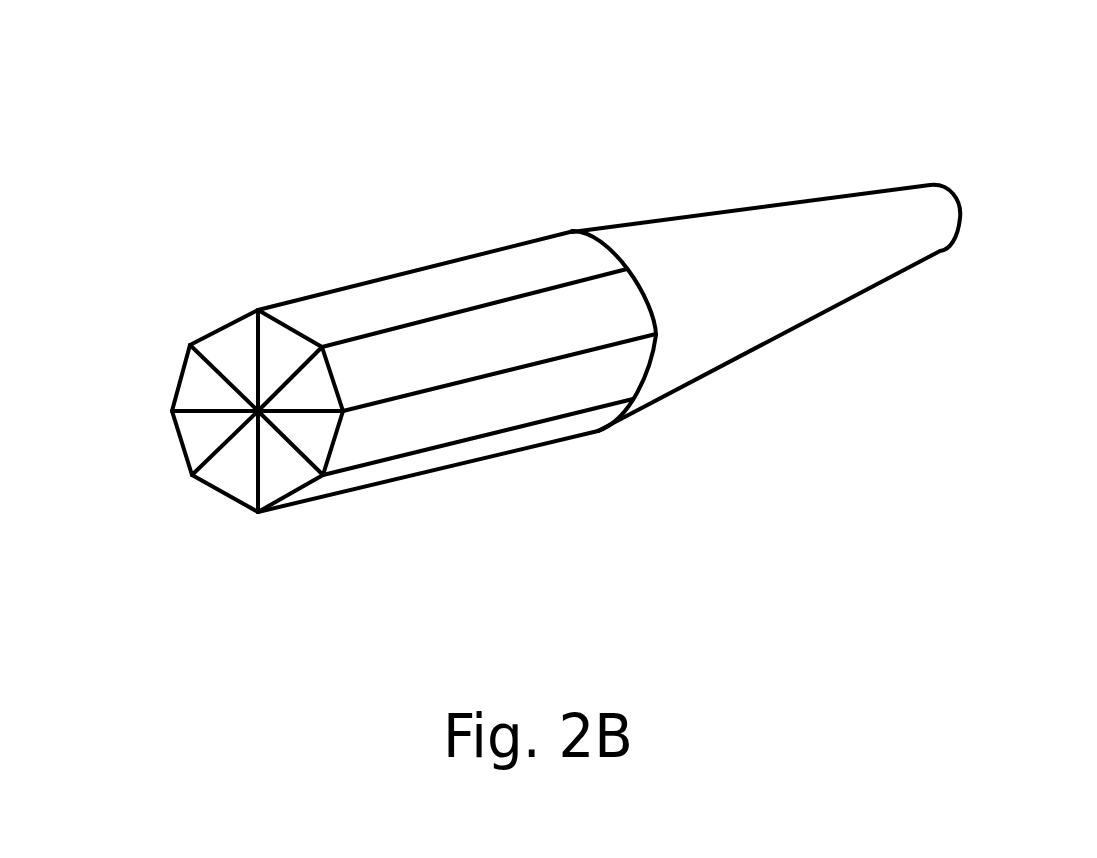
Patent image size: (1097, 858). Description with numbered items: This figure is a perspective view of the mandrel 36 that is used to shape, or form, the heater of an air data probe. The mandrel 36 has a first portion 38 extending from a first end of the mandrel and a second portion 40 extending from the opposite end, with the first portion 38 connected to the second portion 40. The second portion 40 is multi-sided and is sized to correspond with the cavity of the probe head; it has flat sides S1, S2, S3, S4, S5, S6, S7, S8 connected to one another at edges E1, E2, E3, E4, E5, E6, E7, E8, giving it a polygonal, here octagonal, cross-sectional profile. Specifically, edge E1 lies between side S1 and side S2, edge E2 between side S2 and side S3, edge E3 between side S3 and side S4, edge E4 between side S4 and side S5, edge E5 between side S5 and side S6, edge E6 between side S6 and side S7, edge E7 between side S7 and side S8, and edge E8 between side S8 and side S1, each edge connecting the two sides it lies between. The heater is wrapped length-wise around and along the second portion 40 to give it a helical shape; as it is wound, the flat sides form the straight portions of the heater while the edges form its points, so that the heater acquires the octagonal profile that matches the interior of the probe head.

The mandrel 36 is at (501, 297).
The first portion 38 is at (766, 250).
The second portion 40 is at (405, 350).
The edge E1 is at (593, 272).
The edge E2 is at (617, 342).
The edge E3 is at (583, 413).
The edge E4 is at (473, 463).
The edge E5 is at (192, 475).
The edge E6 is at (172, 411).
The edge E7 is at (190, 345).
The edge E8 is at (320, 292).
The side S1 is at (391, 316).
The side S2 is at (423, 371).
The side S3 is at (423, 434).
The side S4 is at (408, 465).
The side S5 is at (218, 493).
The side S6 is at (178, 437).
The side S7 is at (178, 373).
The side S8 is at (220, 327).